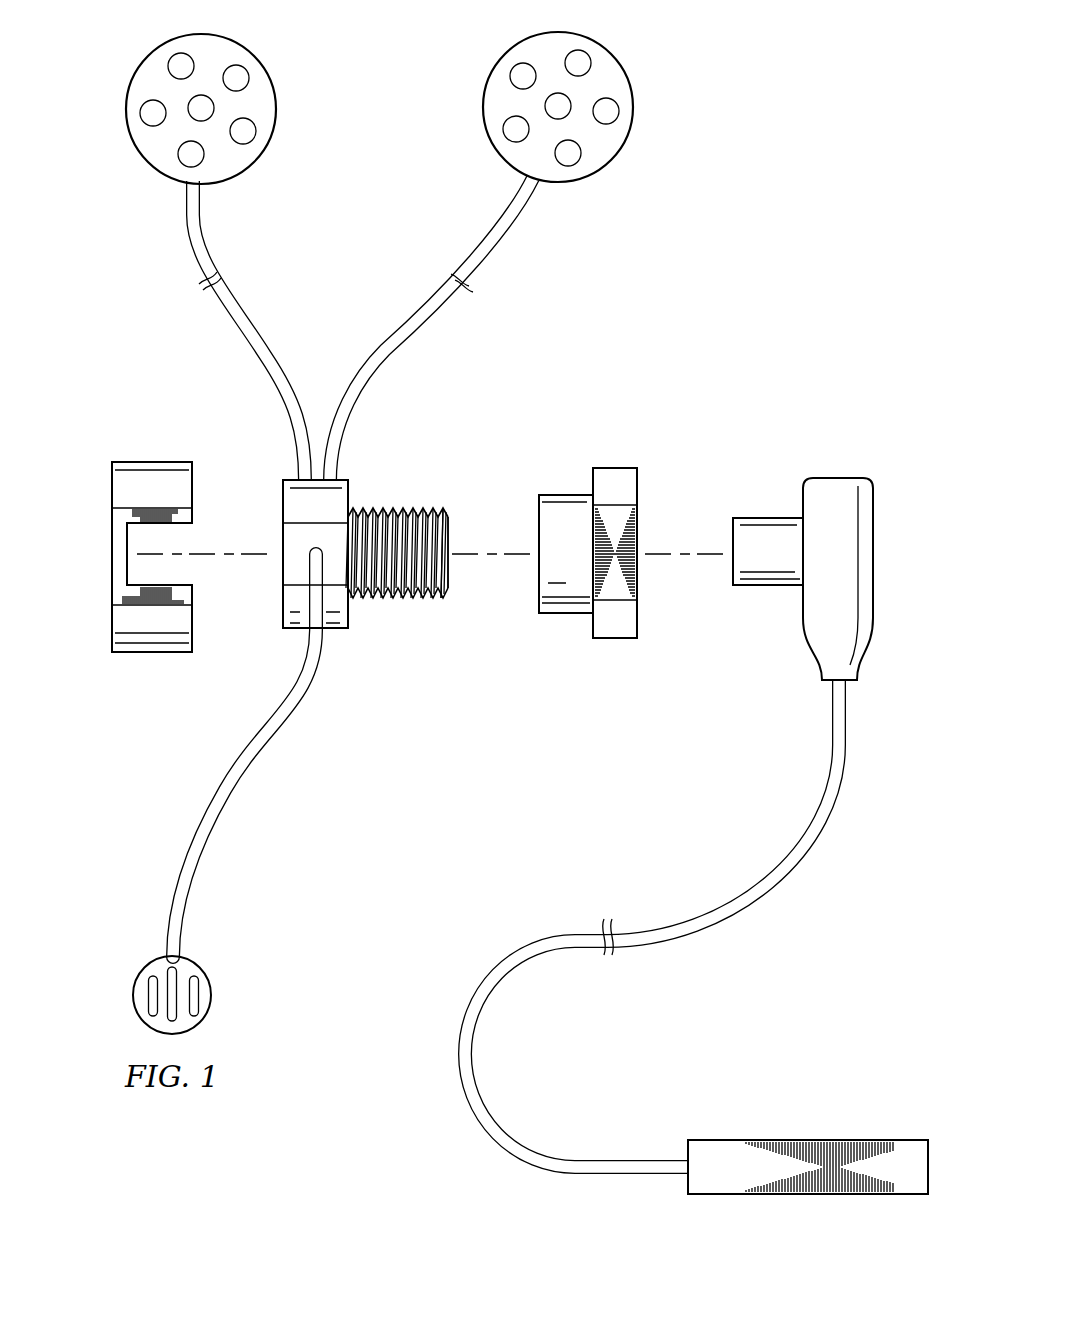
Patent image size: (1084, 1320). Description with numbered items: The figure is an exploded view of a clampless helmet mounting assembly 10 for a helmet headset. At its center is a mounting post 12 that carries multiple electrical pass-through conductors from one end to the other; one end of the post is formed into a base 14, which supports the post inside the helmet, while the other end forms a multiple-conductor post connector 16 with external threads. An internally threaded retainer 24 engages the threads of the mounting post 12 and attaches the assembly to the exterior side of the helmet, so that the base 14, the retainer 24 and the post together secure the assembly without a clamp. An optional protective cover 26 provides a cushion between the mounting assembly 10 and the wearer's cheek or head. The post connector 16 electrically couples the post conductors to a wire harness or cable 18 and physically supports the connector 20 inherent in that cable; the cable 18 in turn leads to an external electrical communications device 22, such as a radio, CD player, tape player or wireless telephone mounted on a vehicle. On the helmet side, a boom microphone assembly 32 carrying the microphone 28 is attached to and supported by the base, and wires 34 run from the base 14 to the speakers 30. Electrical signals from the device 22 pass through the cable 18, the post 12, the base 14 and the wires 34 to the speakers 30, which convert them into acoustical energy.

The clampless helmet mounting assembly 10 is at (780, 214).
The mounting post 12 is at (447, 510).
The base 14 is at (282, 494).
The multiple-conductor post connector 16 is at (456, 590).
The wire harness or cable 18 is at (773, 878).
The connector 20 is at (843, 478).
The external electrical communications device 22 is at (734, 1140).
The retainer 24 is at (620, 468).
The protective cover 26 is at (137, 462).
The microphone 28 is at (212, 996).
The speakers 30 is at (136, 62).
The boom microphone assembly 32 is at (198, 832).
The wires 34 is at (187, 233).